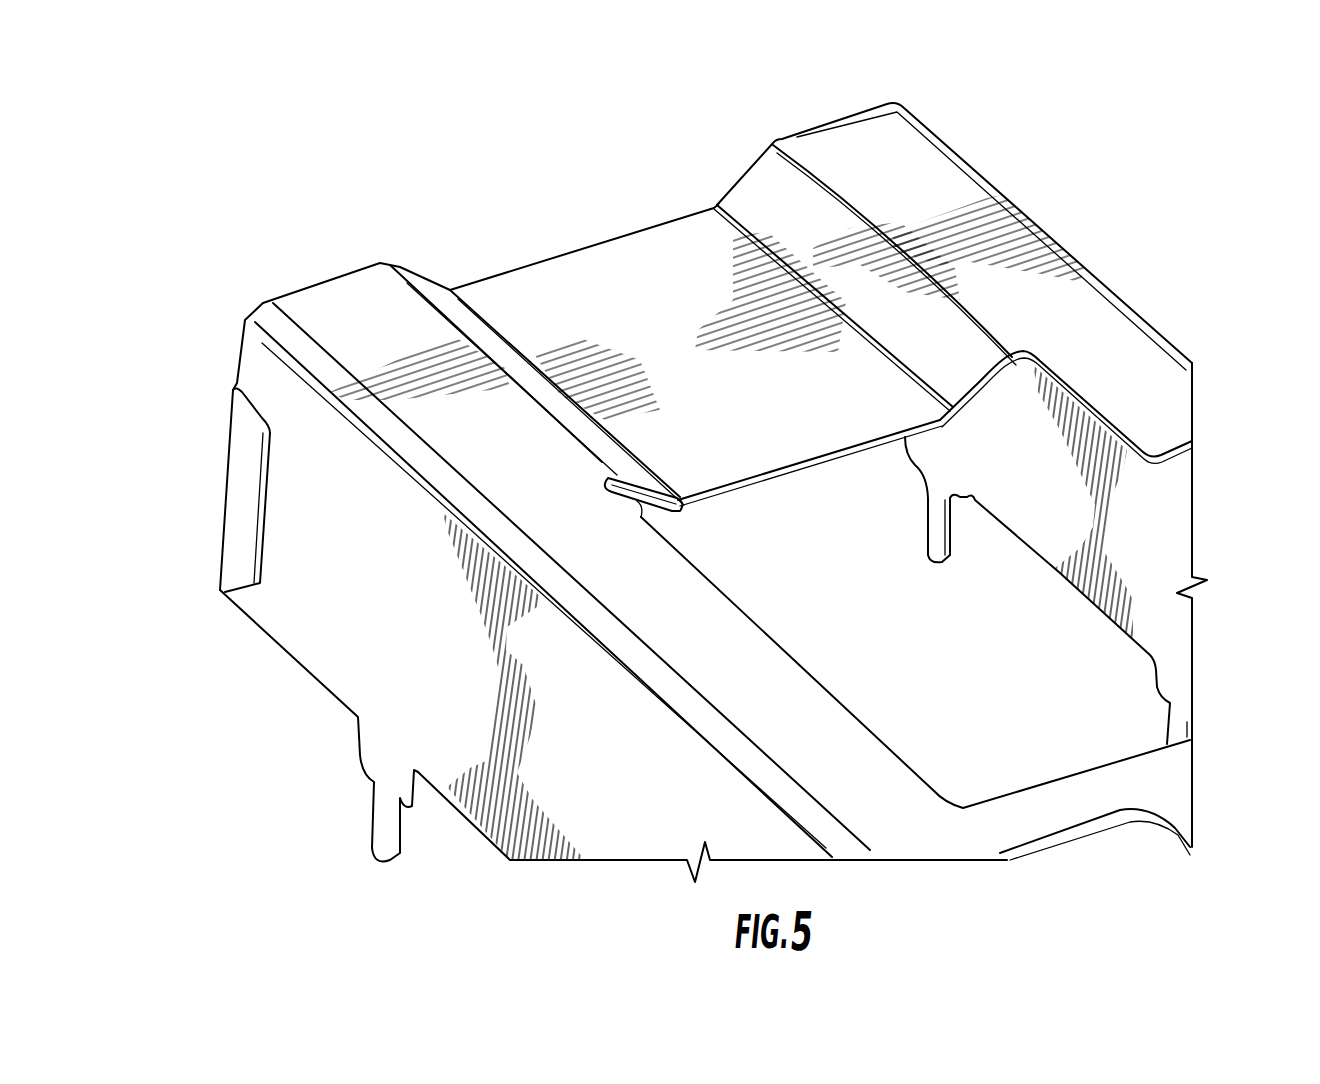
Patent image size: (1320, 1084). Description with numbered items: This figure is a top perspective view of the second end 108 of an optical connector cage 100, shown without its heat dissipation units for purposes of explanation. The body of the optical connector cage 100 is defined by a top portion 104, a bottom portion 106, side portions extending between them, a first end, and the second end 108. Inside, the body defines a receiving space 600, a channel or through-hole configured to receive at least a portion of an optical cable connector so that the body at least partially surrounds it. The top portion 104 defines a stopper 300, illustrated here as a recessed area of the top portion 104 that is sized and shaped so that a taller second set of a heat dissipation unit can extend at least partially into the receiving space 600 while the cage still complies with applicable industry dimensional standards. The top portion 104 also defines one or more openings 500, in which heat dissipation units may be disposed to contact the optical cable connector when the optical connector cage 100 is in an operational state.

The optical connector cage 100 is at (1243, 157).
The top portion 104 is at (926, 192).
The bottom portion 106 is at (289, 705).
The second end 108 is at (677, 214).
The stopper 300 is at (567, 329).
The openings 500 is at (1128, 430).
The receiving space 600 is at (888, 667).